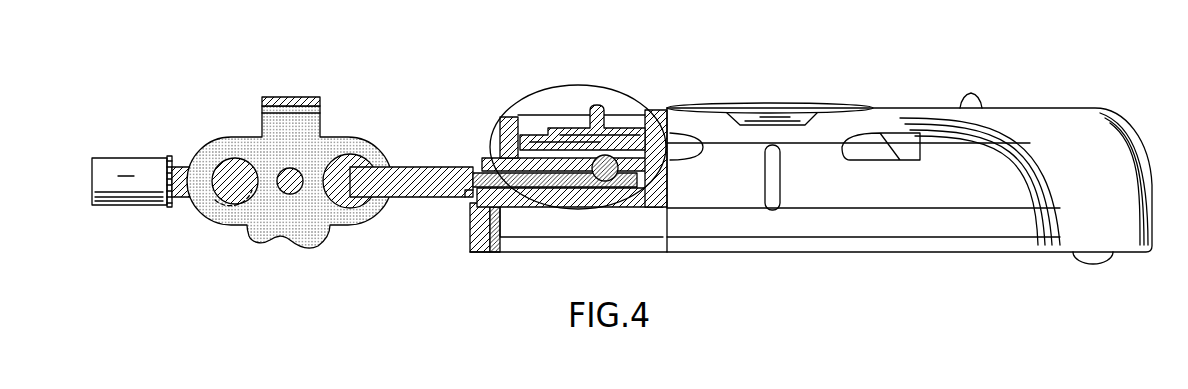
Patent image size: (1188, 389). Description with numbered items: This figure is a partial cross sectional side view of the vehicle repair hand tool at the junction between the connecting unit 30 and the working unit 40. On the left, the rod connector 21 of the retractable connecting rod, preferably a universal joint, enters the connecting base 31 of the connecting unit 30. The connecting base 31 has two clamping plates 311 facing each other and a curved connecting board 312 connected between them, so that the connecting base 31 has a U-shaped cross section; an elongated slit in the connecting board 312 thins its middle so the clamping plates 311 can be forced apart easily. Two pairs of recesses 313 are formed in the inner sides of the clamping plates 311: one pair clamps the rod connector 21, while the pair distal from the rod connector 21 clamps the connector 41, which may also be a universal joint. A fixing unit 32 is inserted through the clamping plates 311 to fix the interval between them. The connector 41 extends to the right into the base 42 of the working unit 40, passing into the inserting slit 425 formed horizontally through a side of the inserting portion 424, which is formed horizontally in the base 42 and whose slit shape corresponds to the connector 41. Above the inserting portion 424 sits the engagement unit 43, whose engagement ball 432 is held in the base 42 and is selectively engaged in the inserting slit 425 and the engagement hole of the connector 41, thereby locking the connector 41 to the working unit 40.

The rod connector 21 is at (138, 168).
The connecting unit 30 is at (252, 75).
The connecting base 31 is at (345, 137).
The clamping plates 311 is at (210, 147).
The connecting board 312 is at (307, 100).
The recesses 313 is at (215, 212).
The fixing unit 32 is at (284, 190).
The connector 41 is at (417, 177).
The working unit 40 is at (878, 62).
The base 42 is at (1022, 117).
The engagement unit 43 is at (539, 151).
The inserting portion 424 is at (515, 167).
The inserting slit 425 is at (480, 170).
The engagement ball 432 is at (605, 172).